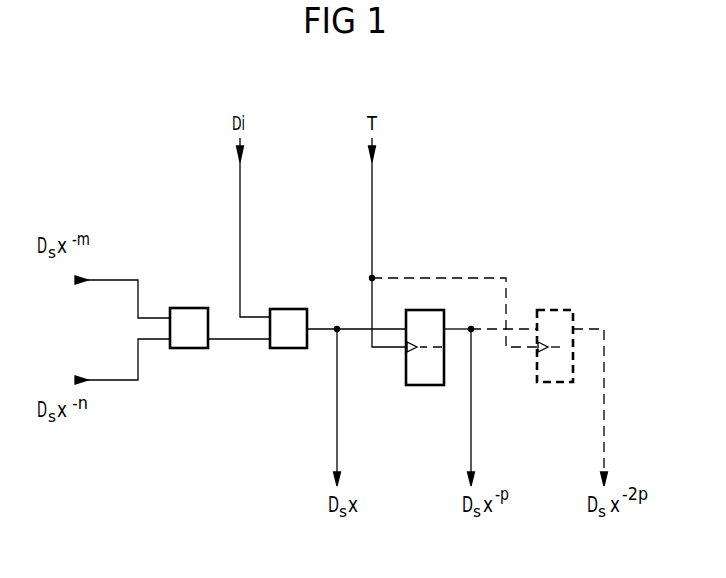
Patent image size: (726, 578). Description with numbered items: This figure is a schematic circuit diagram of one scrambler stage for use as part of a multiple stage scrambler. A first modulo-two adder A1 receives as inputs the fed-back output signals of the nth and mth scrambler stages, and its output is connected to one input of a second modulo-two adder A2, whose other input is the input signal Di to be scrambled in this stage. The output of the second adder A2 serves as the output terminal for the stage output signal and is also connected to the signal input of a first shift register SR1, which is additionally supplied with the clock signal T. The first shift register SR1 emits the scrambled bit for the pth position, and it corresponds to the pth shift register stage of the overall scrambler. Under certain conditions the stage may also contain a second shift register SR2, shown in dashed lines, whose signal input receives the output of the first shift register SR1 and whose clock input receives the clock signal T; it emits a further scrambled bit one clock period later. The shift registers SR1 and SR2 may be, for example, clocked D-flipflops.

The first modulo-2 adder A1 is at (205, 308).
The second modulo-2 adder A2 is at (306, 309).
The first shift register SR1 is at (441, 310).
The second shift register SR2 is at (575, 310).